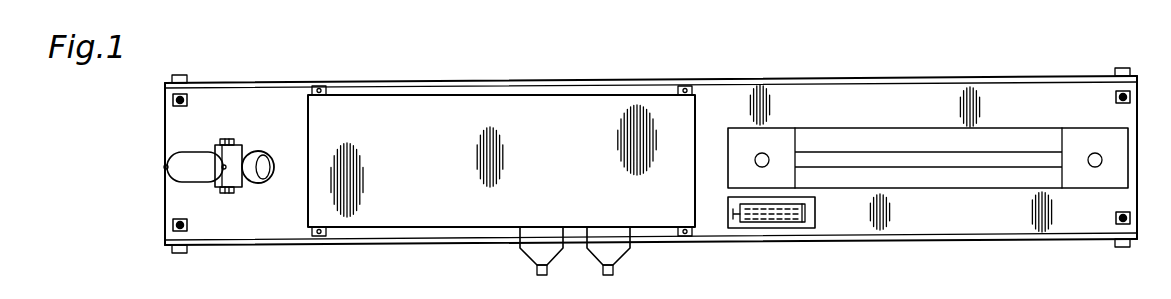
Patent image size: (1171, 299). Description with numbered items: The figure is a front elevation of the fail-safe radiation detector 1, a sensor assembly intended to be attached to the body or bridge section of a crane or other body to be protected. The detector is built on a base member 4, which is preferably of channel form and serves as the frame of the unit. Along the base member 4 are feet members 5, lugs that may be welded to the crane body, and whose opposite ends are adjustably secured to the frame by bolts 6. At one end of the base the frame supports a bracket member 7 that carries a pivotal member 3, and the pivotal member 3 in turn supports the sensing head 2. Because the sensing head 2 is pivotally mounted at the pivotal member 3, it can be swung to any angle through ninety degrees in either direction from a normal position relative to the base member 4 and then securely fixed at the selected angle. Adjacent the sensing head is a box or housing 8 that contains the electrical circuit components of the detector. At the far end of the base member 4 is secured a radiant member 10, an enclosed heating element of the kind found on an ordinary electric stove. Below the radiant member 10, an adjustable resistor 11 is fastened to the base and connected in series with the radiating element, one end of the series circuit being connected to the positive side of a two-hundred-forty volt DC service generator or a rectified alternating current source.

The fail-safe radiation detector 1 is at (500, 82).
The sensing head 2 is at (258, 152).
The pivotal member 3 is at (233, 143).
The base member 4 is at (386, 82).
The feet members 5 is at (184, 76).
The bolts 6 is at (173, 101).
The bracket member 7 is at (218, 148).
The box or housing 8 is at (432, 172).
The radiant member 10 is at (937, 168).
The adjustable resistor 11 is at (815, 206).